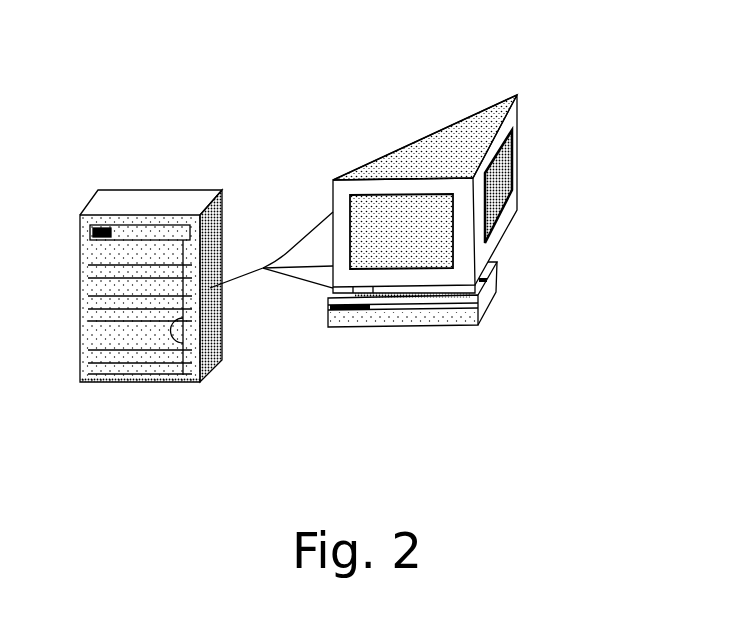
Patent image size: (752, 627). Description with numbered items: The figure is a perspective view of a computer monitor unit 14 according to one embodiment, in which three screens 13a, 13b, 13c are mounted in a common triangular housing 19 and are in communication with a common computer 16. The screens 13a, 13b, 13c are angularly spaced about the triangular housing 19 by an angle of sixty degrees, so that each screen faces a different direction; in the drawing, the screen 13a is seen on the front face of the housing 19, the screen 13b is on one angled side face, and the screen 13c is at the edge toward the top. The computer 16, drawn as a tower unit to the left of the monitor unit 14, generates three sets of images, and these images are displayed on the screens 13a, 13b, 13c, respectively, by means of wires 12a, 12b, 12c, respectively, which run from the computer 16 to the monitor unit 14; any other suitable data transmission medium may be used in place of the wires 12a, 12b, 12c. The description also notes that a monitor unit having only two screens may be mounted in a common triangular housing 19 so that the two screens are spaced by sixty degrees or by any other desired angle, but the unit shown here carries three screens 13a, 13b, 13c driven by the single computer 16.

The monitor unit 14 is at (244, 105).
The computer 16 is at (160, 387).
The wire 12a is at (302, 267).
The wire 12b is at (318, 283).
The wire 12c is at (305, 235).
The screen 13a is at (370, 213).
The screen 13b is at (505, 202).
The screen 13c is at (407, 145).
The triangular housing 19 is at (447, 147).